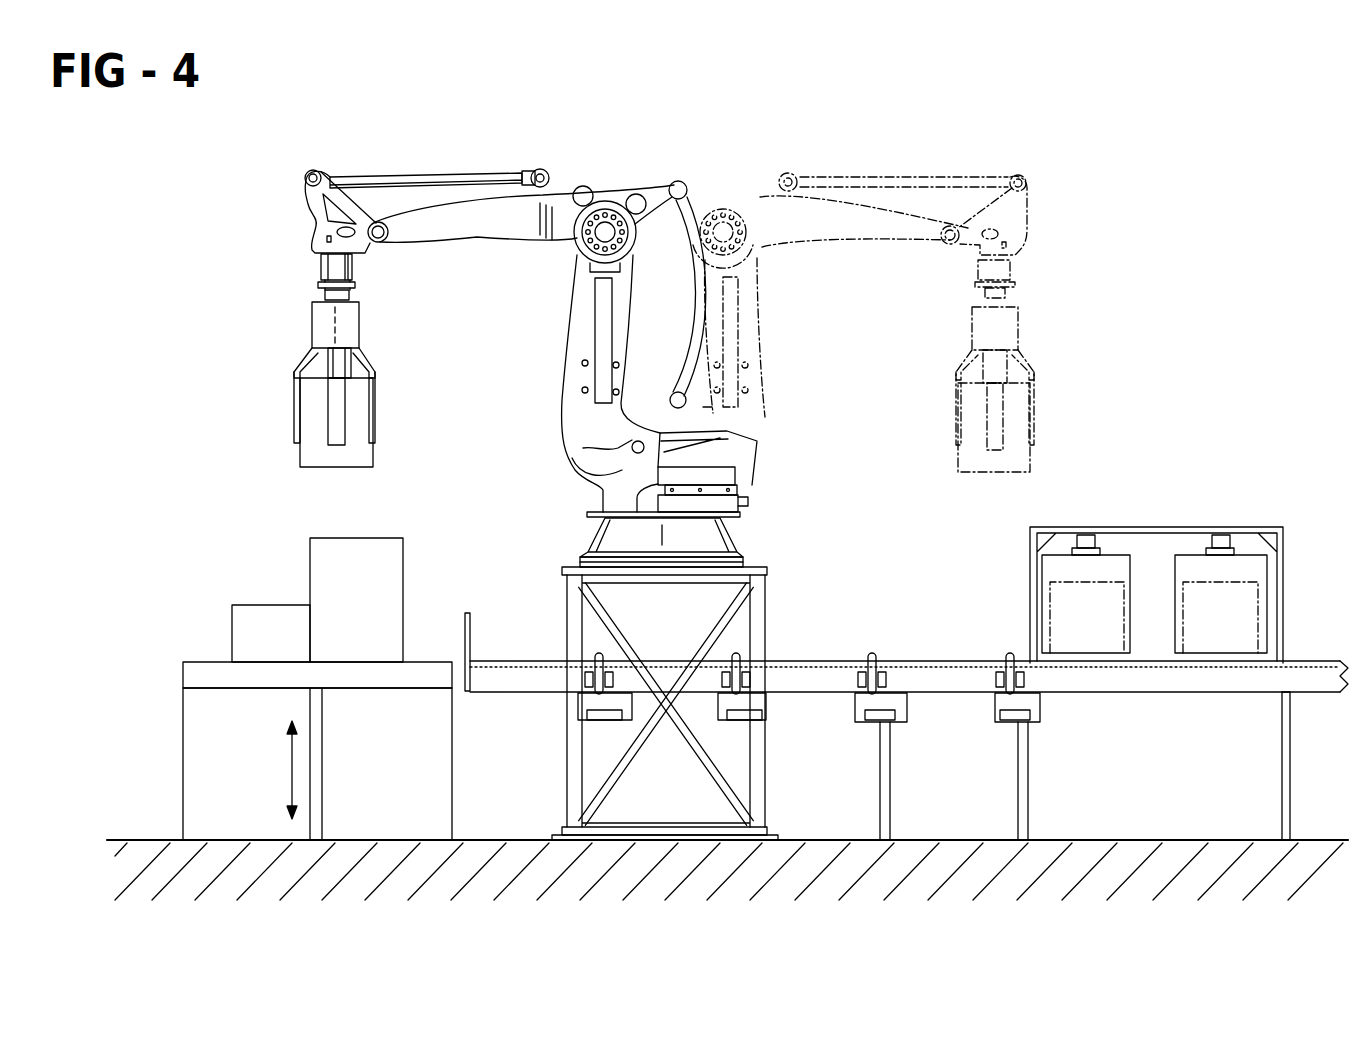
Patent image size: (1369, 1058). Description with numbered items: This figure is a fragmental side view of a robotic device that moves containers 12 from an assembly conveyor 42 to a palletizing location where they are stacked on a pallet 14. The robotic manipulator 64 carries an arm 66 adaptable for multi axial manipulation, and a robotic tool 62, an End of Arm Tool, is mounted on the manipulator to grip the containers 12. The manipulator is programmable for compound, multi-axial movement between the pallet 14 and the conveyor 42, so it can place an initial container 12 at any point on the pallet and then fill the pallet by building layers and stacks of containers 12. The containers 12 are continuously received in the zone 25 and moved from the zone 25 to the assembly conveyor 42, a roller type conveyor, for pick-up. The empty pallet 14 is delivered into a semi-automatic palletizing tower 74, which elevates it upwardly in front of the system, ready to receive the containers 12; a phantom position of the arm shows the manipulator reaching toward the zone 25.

The container 12 is at (272, 620).
The pallet 14 is at (206, 668).
The zone 25 is at (1157, 528).
The assembly conveyor 42 is at (933, 680).
The robotic tool 62 is at (325, 322).
The robotic manipulator 64 is at (662, 192).
The arm 66 is at (455, 223).
The semi-automatic palletizing tower 74 is at (184, 783).